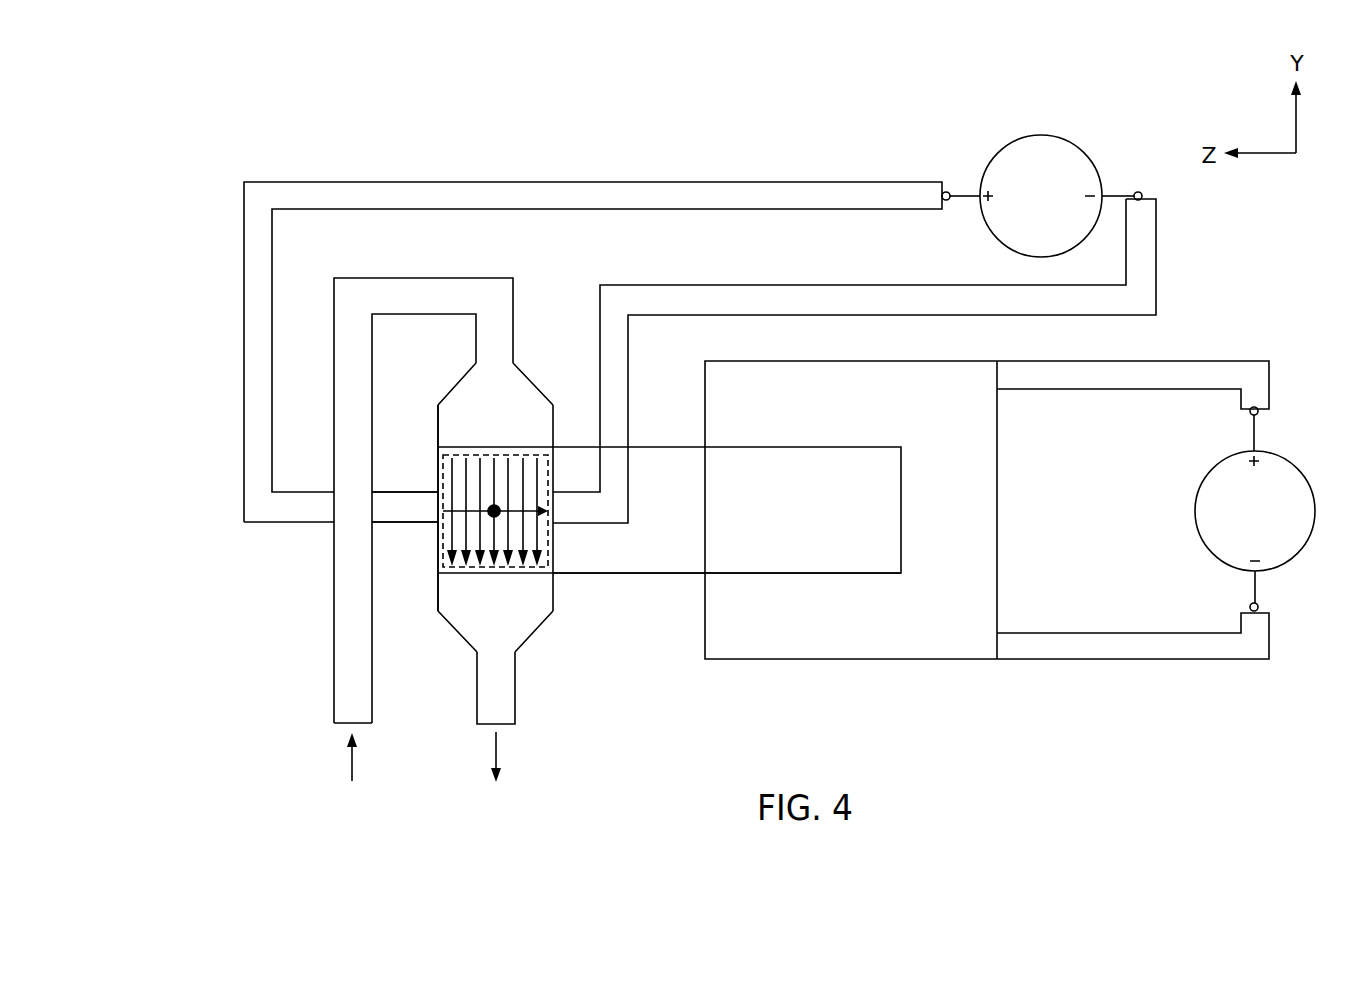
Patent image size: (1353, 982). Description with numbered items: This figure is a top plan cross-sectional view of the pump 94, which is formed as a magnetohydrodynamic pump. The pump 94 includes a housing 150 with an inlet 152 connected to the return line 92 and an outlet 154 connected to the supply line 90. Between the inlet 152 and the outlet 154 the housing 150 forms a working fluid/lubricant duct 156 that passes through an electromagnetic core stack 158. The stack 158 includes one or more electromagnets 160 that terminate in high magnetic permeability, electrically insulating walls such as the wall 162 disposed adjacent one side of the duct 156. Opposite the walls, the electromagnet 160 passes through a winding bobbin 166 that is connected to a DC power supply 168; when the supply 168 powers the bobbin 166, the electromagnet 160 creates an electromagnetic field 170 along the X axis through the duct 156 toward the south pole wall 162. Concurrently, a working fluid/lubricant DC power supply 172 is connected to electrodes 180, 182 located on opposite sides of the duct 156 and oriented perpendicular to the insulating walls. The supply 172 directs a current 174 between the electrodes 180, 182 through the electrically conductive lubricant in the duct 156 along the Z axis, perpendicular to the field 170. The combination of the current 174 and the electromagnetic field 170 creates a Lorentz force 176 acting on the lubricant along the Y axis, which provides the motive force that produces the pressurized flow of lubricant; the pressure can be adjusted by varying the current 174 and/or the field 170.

The supply line 90 is at (516, 688).
The return line 92 is at (333, 668).
The pump 94 is at (593, 176).
The housing 150 is at (556, 420).
The inlet 152 is at (476, 364).
The outlet 154 is at (517, 651).
The working fluid/lubricant duct 156 is at (433, 590).
The electromagnetic core stack 158 is at (663, 582).
The electromagnet 160 is at (669, 452).
The high magnetic permeability, electrically insulating wall 162 is at (440, 468).
The winding bobbin 166 is at (851, 659).
The DC power supply 168 is at (1195, 509).
The electromagnetic field 170 is at (497, 514).
The working fluid/lubricant DC power supply 172 is at (1041, 135).
The current 174 is at (548, 509).
The Lorentz force 176 is at (452, 530).
The electrode 180 is at (440, 485).
The electrode 182 is at (553, 550).